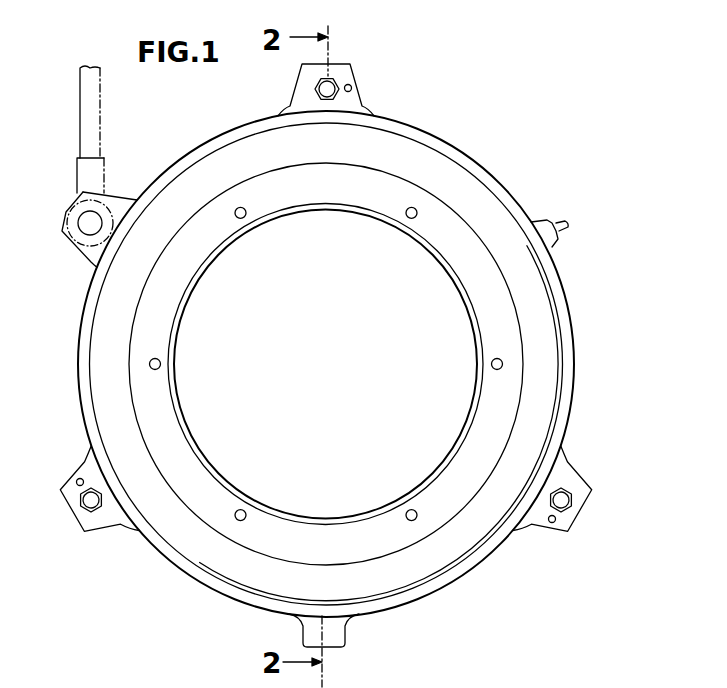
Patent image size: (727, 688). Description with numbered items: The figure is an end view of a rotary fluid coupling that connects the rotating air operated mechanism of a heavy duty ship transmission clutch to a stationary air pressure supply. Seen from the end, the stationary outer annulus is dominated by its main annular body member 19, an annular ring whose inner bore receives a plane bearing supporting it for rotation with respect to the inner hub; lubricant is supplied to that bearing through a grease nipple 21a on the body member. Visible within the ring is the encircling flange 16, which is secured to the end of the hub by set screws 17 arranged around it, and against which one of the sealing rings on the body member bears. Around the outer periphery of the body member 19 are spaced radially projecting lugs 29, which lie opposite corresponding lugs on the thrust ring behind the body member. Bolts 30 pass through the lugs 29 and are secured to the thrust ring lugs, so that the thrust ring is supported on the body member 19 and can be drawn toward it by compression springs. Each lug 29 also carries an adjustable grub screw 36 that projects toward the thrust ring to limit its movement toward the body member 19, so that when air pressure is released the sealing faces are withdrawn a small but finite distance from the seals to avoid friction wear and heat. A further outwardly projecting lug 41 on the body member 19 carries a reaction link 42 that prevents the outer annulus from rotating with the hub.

The encircling flange 16 is at (500, 212).
The set screws 17 is at (149, 362).
The main annular body member 19 is at (566, 308).
The grease nipple 21a is at (552, 246).
The radially projecting lugs 29 is at (292, 106).
The bolts 30 is at (335, 86).
The adjustable grub screw 36 is at (352, 87).
The outwardly projecting lug 41 is at (86, 262).
The reaction link 42 is at (80, 140).